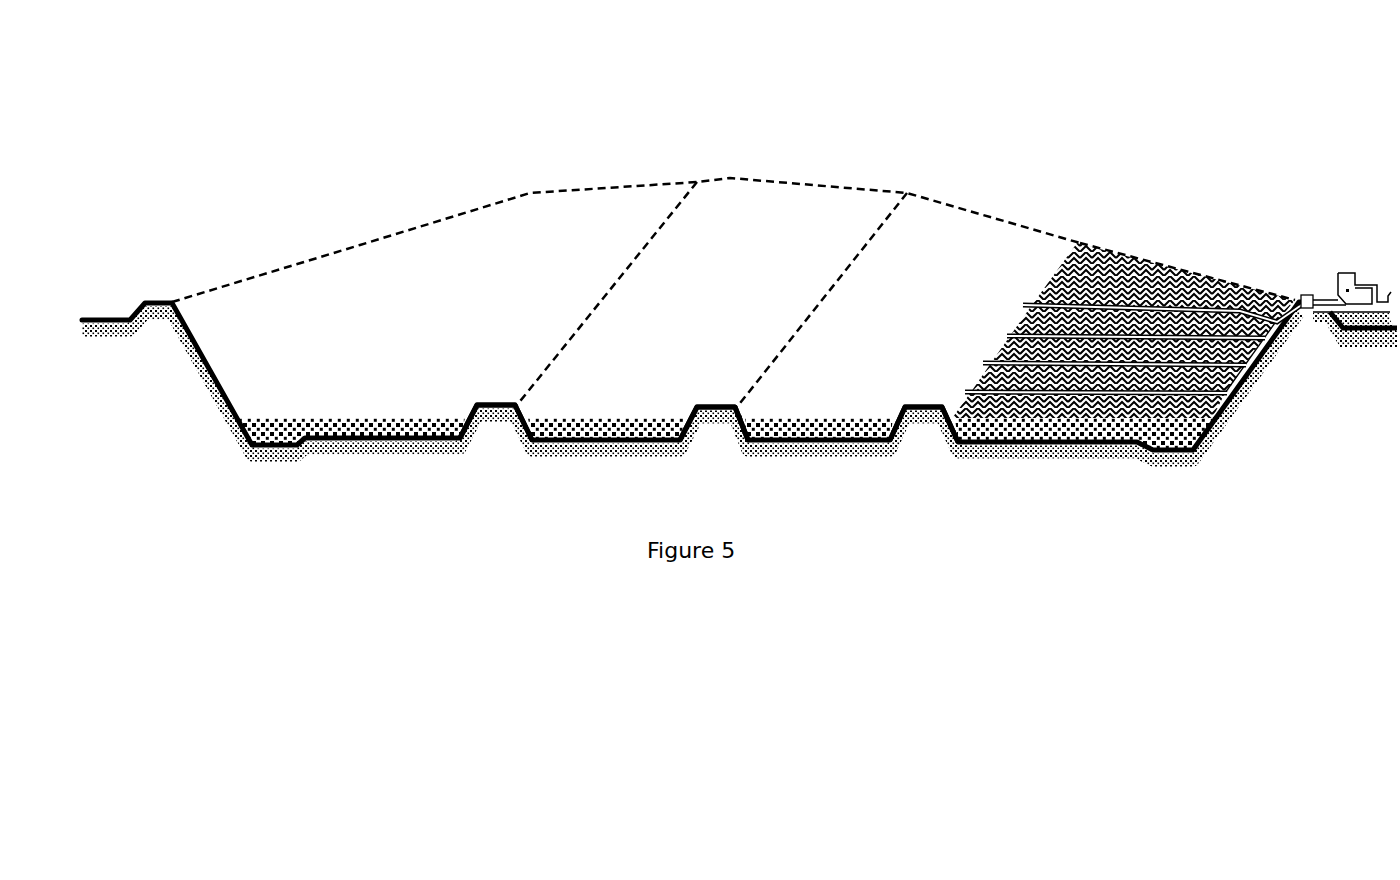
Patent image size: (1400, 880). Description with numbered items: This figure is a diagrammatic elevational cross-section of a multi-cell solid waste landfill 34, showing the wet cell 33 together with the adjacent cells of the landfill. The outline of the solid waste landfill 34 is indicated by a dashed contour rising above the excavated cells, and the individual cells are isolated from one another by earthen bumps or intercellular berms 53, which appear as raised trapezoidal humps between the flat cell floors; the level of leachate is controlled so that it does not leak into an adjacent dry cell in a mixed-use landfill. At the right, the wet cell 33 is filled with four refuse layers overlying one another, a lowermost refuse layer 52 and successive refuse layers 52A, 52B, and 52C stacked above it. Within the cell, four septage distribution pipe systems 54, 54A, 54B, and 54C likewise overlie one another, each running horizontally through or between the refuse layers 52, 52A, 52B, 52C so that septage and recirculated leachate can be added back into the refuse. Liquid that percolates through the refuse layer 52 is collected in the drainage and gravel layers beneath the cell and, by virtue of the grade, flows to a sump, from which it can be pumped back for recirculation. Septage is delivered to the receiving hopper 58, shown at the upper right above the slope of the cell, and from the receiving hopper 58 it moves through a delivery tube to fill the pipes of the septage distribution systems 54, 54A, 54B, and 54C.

The wet cell 33 is at (1124, 303).
The solid waste landfill 34 is at (819, 138).
The refuse layer 52 is at (1090, 407).
The refuse layer 52A is at (1108, 377).
The refuse layer 52B is at (1128, 349).
The refuse layer 52C is at (1143, 320).
The intercellular berm 53 is at (478, 402).
The septage distribution system 54 is at (963, 387).
The septage distribution pipe system 54A is at (982, 358).
The septage distribution pipe system 54B is at (1005, 330).
The septage distribution pipe system 54C is at (1021, 299).
The receiving hopper 58 is at (1335, 270).